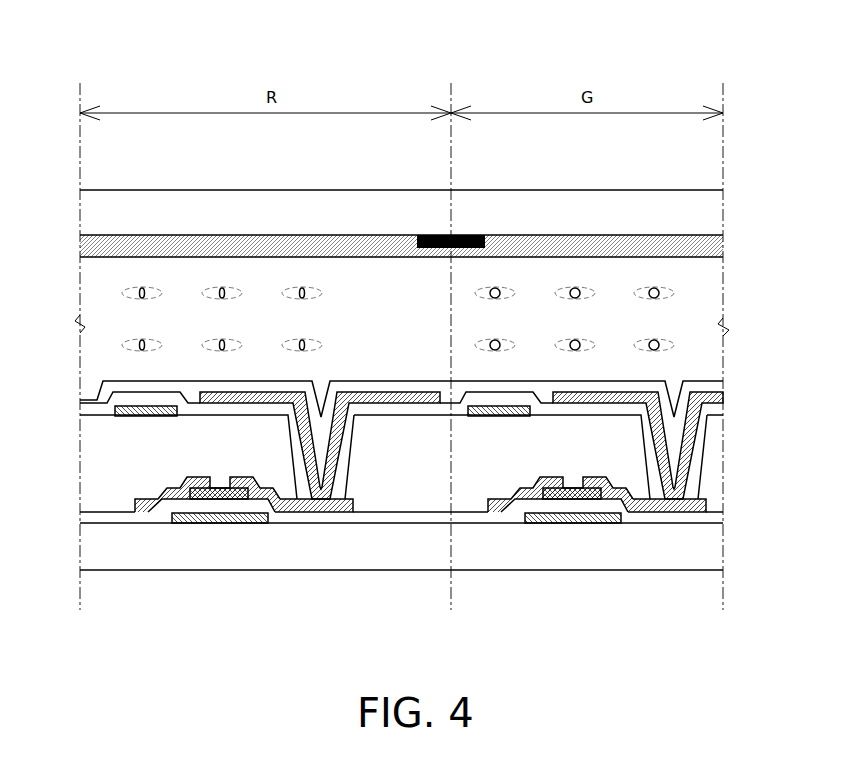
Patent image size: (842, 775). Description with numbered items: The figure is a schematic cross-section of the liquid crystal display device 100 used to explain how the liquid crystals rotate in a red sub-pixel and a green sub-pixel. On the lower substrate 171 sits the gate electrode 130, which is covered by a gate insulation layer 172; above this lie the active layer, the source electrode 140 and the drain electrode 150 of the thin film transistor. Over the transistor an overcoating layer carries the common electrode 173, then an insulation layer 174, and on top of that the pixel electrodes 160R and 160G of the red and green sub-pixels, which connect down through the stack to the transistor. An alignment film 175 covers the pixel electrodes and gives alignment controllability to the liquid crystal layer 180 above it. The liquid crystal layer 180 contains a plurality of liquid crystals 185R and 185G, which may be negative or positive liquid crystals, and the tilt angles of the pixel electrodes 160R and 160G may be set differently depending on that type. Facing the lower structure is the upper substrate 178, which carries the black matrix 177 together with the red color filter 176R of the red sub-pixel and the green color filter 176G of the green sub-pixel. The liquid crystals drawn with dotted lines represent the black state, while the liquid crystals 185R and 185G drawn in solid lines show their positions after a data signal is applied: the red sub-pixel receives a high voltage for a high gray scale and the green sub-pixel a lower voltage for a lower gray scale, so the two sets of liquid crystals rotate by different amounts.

The liquid crystal display device 100 is at (703, 51).
The gate electrode 130 is at (218, 519).
The source electrode 140 is at (148, 512).
The drain electrode 150 is at (290, 506).
The pixel electrode 160R is at (322, 500).
The pixel electrode 160G is at (672, 500).
The lower substrate 171 is at (100, 546).
The gate insulation layer 172 is at (100, 519).
The common electrode 173 is at (130, 414).
The insulation layer 174 is at (88, 408).
The alignment film 175 is at (87, 399).
The red color filter 176R is at (100, 241).
The green color filter 176G is at (710, 247).
The black matrix 177 is at (468, 235).
The upper substrate 178 is at (103, 211).
The liquid crystal layer 180 is at (100, 297).
The liquid crystals 185R is at (140, 292).
The liquid crystals 185G is at (660, 292).